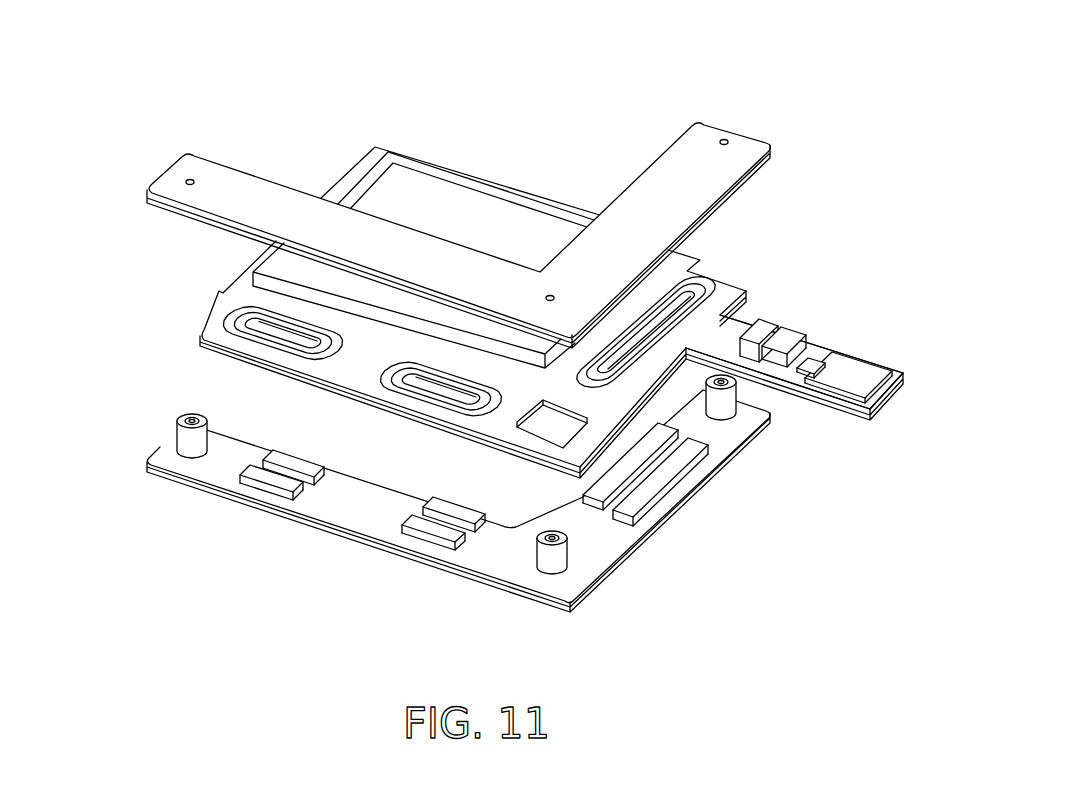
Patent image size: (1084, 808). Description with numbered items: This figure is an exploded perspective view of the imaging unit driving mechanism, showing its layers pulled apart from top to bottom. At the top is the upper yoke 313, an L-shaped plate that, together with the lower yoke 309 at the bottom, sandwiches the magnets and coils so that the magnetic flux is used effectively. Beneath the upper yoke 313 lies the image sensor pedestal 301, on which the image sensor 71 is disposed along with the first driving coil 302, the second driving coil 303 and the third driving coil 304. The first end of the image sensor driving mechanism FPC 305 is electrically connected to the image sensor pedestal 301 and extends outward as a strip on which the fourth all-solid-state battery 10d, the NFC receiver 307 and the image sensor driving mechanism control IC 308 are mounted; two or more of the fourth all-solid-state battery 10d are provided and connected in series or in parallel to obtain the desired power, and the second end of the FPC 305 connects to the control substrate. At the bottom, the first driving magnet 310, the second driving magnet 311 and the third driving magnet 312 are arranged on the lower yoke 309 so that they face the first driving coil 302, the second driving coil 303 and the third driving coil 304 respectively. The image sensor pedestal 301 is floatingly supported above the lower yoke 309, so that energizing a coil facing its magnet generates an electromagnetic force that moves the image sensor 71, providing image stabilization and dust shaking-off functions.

The upper yoke 313 is at (233, 187).
The image sensor 71 is at (427, 200).
The image sensor pedestal 301 is at (215, 332).
The first driving coil 302 is at (263, 337).
The second driving coil 303 is at (417, 397).
The third driving coil 304 is at (700, 290).
The image sensor driving mechanism FPC 305 is at (827, 343).
The fourth all-solid-state battery 10d is at (793, 330).
The NFC receiver 307 is at (818, 367).
The image sensor driving mechanism control IC 308 is at (887, 365).
The lower yoke 309 is at (215, 470).
The first driving magnet 310 is at (287, 487).
The second driving magnet 311 is at (450, 537).
The third driving magnet 312 is at (678, 460).